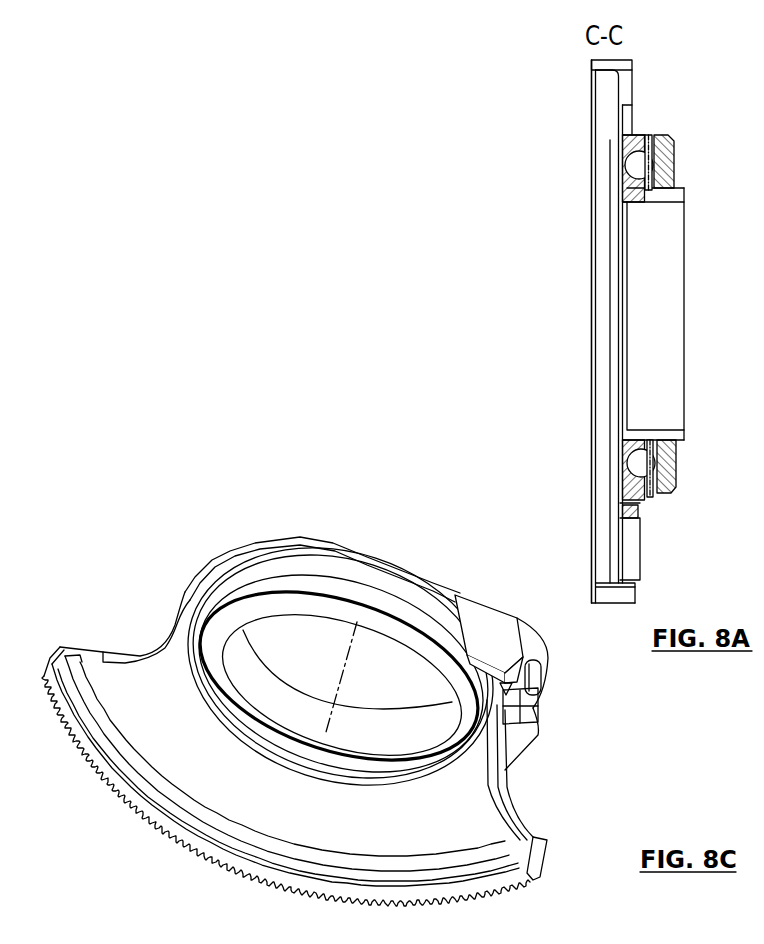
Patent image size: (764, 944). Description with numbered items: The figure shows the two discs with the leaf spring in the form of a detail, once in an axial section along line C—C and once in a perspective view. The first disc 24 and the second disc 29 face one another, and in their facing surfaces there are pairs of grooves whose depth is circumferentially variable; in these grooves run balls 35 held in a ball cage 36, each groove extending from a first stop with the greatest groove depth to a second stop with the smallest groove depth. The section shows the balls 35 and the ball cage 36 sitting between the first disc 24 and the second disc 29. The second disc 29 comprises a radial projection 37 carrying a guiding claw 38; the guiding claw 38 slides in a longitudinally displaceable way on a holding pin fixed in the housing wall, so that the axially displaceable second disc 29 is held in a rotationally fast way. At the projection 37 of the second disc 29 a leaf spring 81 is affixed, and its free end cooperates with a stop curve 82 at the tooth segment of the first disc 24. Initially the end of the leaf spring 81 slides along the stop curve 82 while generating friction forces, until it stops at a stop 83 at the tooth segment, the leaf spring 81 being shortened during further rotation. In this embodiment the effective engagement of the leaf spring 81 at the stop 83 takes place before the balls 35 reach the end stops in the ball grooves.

In FIG. 8A, the first disc 24 is at (632, 143).
In FIG. 8C, the first disc 24 is at (295, 567).
In FIG. 8A, the second disc 29 is at (672, 142).
In FIG. 8C, the second disc 29 is at (390, 558).
In FIG. 8A, the balls 35 is at (652, 140).
In FIG. 8A, the ball cage 36 is at (667, 143).
In FIG. 8C, the radial projection 37 is at (528, 638).
In FIG. 8C, the guiding claw 38 is at (530, 672).
In FIG. 8A, the leaf spring 81 is at (636, 518).
In FIG. 8C, the leaf spring 81 is at (512, 798).
In FIG. 8C, the stop curve 82 is at (500, 818).
In FIG. 8C, the stop 83 is at (533, 840).